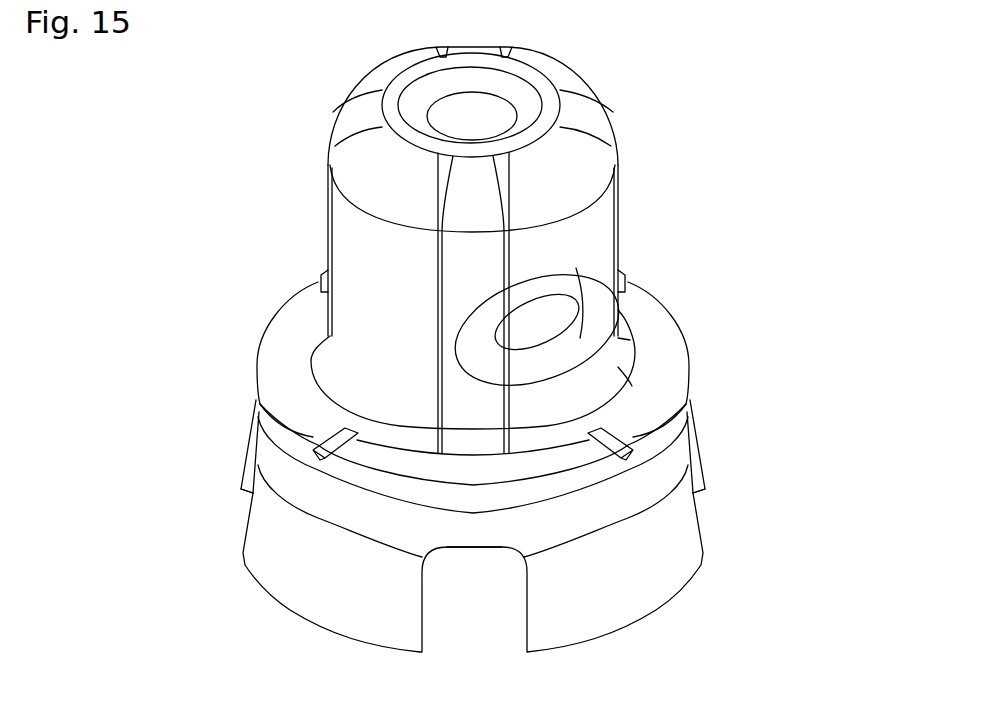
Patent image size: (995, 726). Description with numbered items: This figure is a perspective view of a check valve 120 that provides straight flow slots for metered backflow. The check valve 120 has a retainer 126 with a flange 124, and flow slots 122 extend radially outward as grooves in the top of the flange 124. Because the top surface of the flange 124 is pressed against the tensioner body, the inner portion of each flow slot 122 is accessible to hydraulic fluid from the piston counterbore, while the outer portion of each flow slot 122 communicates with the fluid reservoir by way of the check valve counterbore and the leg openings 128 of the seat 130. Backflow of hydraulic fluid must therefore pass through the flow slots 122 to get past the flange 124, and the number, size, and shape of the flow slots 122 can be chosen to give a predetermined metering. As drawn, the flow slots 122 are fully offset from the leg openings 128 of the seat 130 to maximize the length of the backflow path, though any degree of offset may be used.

The check valve 120 is at (182, 193).
The flow slots 122 is at (321, 275).
The flange 124 is at (659, 360).
The retainer 126 is at (574, 82).
The leg openings 128 is at (712, 505).
The seat 130 is at (592, 515).